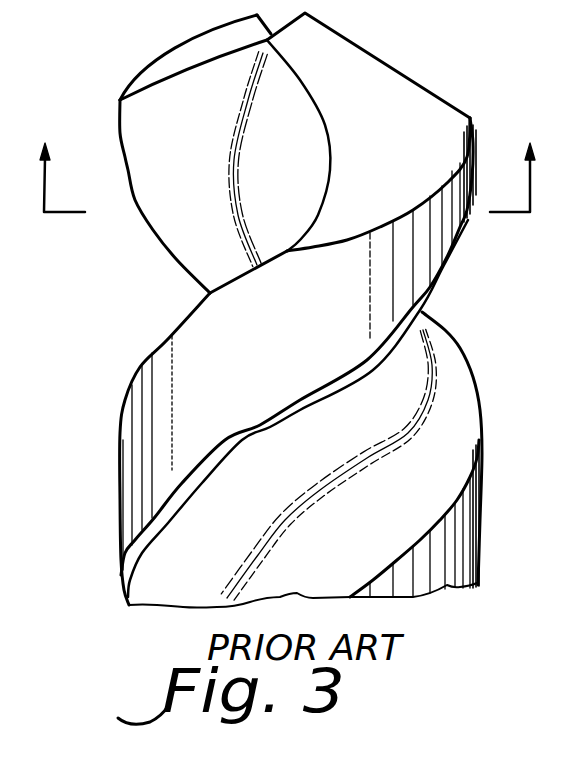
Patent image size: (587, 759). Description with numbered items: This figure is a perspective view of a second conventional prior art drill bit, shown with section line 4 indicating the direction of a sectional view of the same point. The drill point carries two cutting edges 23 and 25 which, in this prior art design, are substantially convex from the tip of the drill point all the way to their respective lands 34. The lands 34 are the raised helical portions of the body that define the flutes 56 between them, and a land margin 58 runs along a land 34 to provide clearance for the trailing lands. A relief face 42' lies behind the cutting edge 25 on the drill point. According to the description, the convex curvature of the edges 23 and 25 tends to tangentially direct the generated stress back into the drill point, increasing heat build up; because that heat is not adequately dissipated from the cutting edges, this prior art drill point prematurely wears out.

The cutting edge 23 is at (172, 77).
The cutting edge 25 is at (378, 45).
The relief face 42' is at (376, 145).
The land margin 58 is at (451, 253).
The land 34 is at (270, 372).
The flute 56 is at (458, 396).
The section line 4- 4 is at (287, 175).